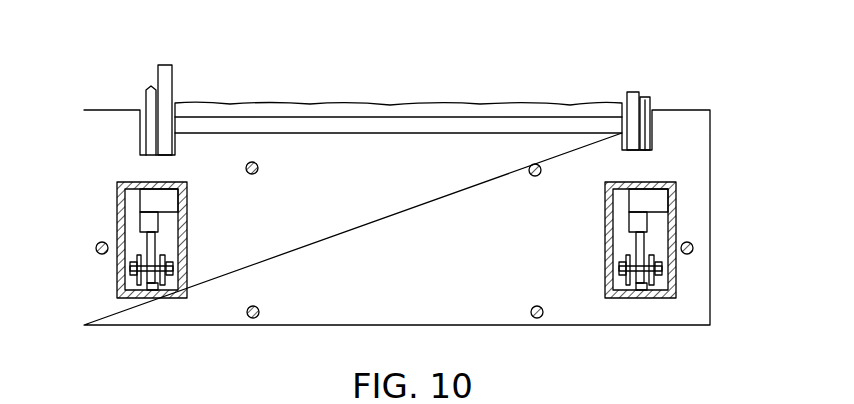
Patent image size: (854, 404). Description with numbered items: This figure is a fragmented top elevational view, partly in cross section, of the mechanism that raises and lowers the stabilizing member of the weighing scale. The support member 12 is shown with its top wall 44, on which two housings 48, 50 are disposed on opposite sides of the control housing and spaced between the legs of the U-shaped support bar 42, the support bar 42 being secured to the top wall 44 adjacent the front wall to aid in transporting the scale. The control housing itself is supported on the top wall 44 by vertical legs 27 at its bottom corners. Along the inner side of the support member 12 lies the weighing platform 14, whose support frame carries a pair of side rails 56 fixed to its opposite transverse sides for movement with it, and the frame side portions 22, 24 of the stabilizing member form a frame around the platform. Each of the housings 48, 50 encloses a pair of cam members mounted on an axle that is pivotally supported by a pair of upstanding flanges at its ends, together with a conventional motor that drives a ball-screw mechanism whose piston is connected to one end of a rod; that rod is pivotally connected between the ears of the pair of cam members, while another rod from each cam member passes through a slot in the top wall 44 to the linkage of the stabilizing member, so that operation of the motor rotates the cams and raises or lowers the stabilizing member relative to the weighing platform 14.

The support member 12 is at (309, 330).
The weighing platform 14 is at (310, 108).
The frame side portion 22 is at (646, 103).
The frame side portion 24 is at (150, 88).
The vertical legs 27 is at (260, 169).
The U-shaped support bar 42 is at (100, 257).
The top wall 44 is at (393, 247).
The housing 48 is at (644, 247).
The housing 50 is at (143, 226).
The side rails 56 is at (168, 81).